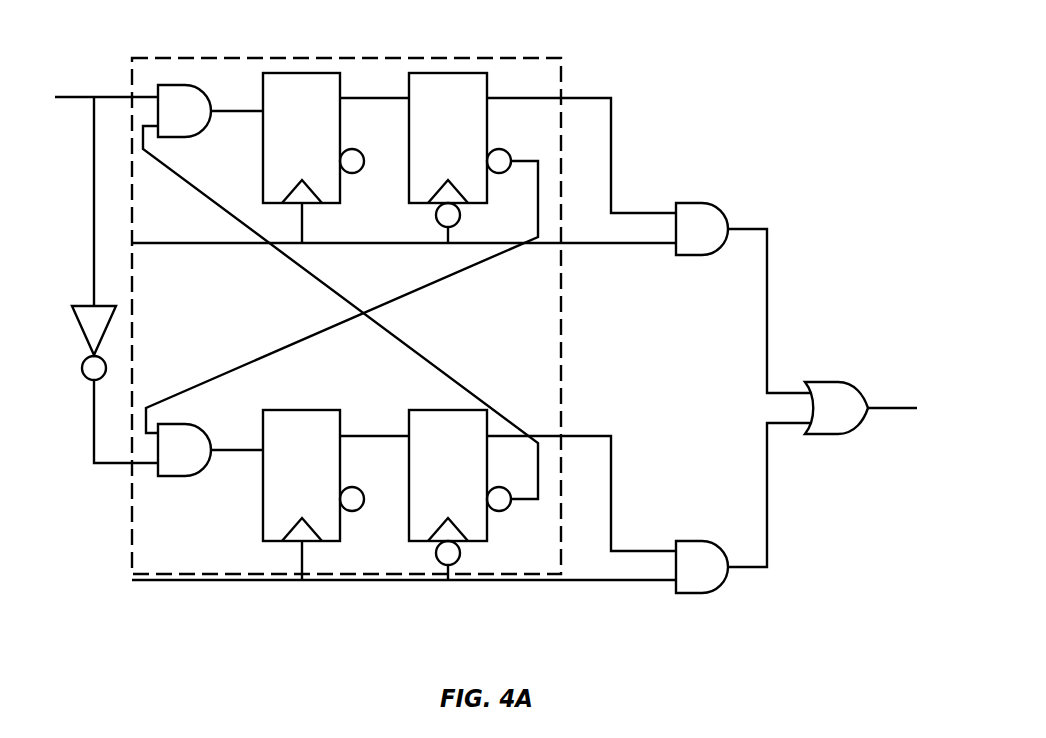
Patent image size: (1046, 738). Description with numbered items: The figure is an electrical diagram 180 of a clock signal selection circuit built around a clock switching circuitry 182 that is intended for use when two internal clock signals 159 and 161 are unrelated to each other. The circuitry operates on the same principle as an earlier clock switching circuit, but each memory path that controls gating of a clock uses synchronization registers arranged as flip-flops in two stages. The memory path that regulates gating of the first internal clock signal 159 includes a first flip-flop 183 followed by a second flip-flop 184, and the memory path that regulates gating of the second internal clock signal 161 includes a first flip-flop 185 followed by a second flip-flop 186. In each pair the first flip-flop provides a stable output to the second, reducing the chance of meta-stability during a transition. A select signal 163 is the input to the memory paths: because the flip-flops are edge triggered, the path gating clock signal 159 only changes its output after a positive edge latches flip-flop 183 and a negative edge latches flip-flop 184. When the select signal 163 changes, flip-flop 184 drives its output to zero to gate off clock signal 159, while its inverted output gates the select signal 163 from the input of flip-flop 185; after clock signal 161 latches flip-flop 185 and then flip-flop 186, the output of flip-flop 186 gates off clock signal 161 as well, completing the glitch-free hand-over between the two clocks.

The internal clock signal 159 is at (152, 581).
The internal clock signal 161 is at (160, 245).
The select signal 163 is at (68, 98).
The electrical diagram 180 is at (688, 43).
The clock switching circuitry 182 is at (346, 57).
The first flip-flop 183 is at (342, 468).
The second flip-flop 184 is at (488, 468).
The first flip-flop 185 is at (341, 129).
The second flip-flop 186 is at (488, 129).